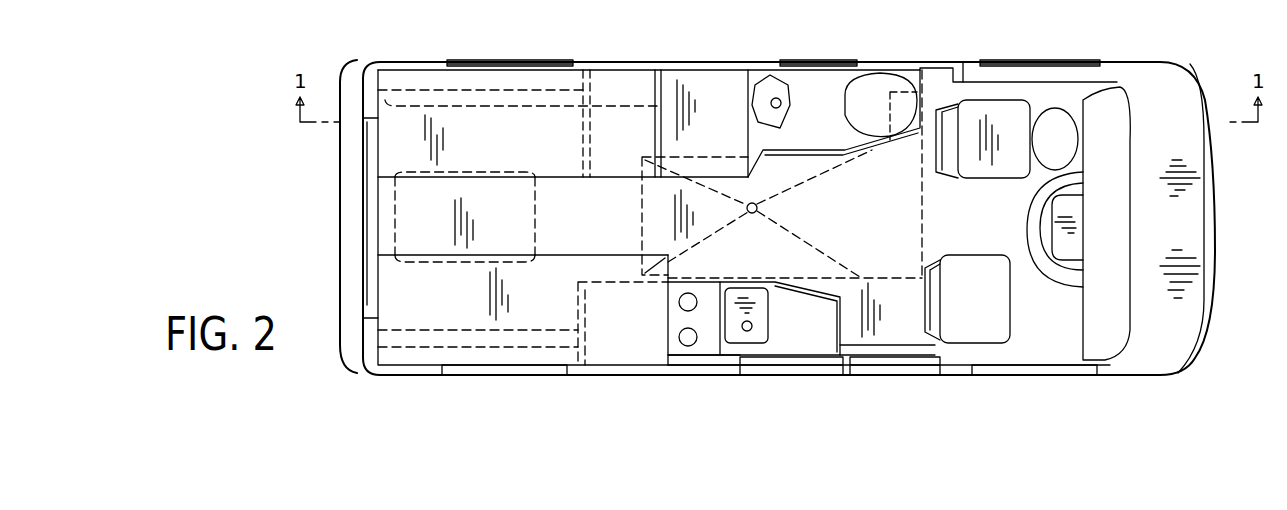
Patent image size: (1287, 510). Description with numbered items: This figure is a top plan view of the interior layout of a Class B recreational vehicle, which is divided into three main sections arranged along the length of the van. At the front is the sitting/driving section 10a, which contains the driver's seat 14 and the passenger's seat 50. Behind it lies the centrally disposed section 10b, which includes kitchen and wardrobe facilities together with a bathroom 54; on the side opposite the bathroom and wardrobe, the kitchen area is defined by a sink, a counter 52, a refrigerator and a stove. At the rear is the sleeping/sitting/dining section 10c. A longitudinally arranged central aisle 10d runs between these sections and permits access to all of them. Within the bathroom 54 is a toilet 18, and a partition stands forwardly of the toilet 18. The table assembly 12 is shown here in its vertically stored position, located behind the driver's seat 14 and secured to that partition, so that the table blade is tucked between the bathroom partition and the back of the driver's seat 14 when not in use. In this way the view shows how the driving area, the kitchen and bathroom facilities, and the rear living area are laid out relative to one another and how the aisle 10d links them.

The sitting/driving section 10a is at (1035, 105).
The centrally disposed section 10b is at (820, 175).
The sleeping/sitting/dining section 10c is at (466, 158).
The central aisle 10d is at (877, 238).
The table assembly 12 is at (923, 143).
The driver's seat 14 is at (1003, 133).
The toilet 18 is at (873, 108).
The passenger's seat 50 is at (992, 315).
The counter 52 is at (820, 335).
The bathroom 54 is at (805, 108).